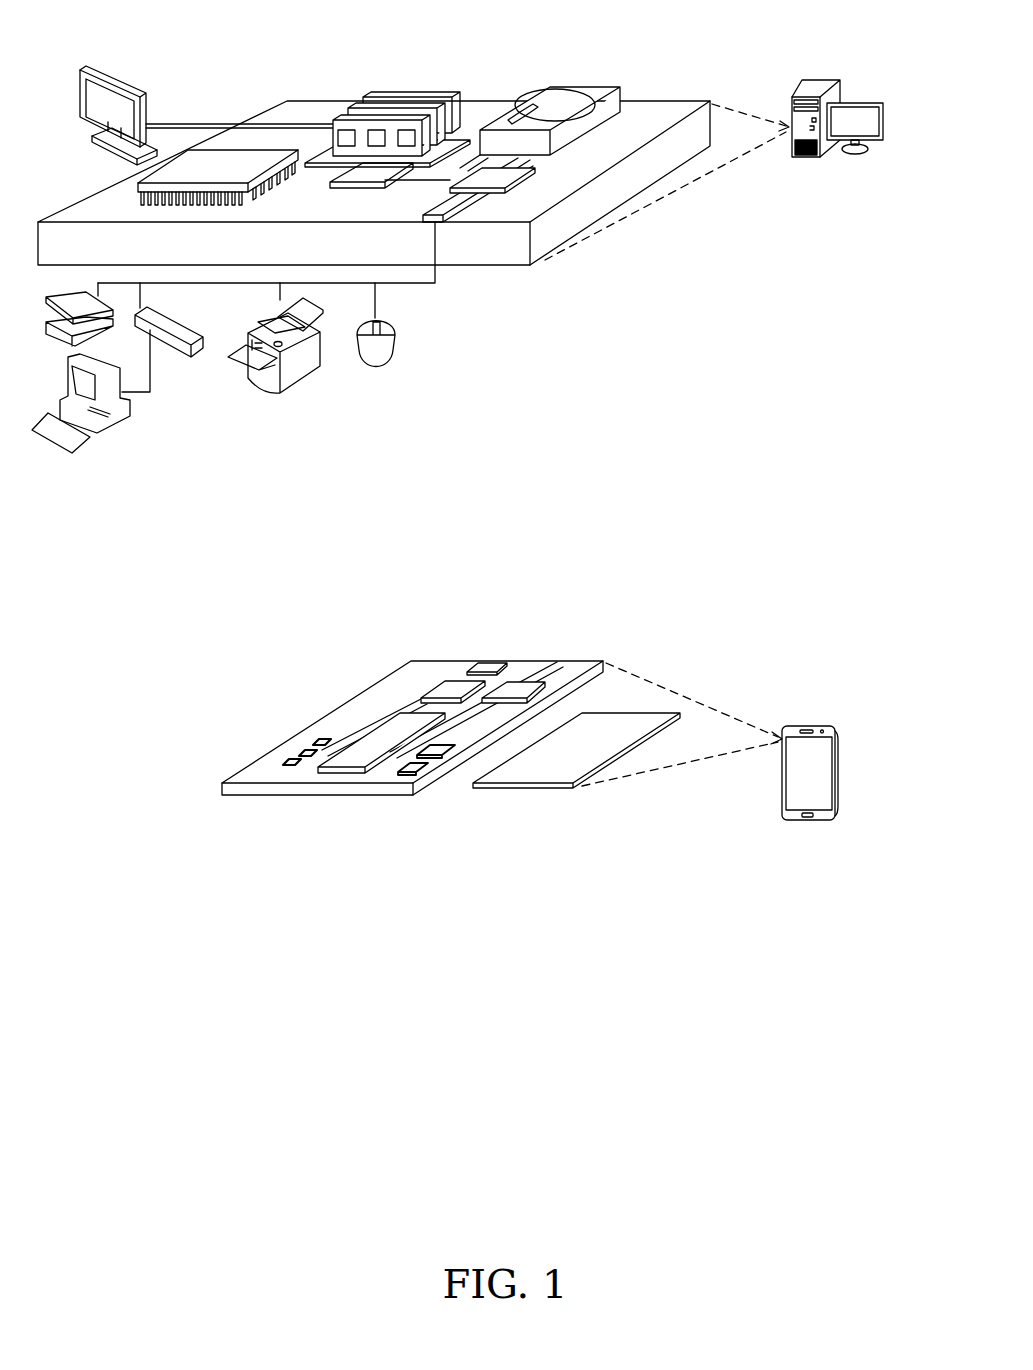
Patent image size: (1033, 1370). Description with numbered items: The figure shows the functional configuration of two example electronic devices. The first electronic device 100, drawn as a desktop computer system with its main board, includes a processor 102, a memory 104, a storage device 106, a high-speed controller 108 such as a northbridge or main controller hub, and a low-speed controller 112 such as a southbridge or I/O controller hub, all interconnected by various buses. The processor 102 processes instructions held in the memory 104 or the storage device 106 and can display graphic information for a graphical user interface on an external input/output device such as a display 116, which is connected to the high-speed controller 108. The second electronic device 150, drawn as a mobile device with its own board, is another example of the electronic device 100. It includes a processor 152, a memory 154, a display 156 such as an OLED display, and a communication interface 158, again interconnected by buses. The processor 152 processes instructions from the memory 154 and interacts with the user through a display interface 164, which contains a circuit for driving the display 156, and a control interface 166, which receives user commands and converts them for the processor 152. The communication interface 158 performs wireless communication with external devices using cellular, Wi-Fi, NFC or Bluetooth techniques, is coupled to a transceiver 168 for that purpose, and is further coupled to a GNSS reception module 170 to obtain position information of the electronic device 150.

The electronic device 100 is at (840, 86).
The processor 102 is at (215, 163).
The memory 104 is at (398, 95).
The storage device 106 is at (571, 98).
The high-speed controller 108 is at (374, 175).
The low-speed controller 112 is at (496, 174).
The display 116 is at (105, 73).
The electronic device 150 is at (838, 771).
The processor 152 is at (355, 758).
The memory 154 is at (297, 755).
The display 156 is at (533, 778).
The communication interface 158 is at (450, 688).
The display interface 164 is at (405, 773).
The control interface 166 is at (437, 750).
The transceiver 168 is at (515, 687).
The GNSS reception module 170 is at (489, 668).